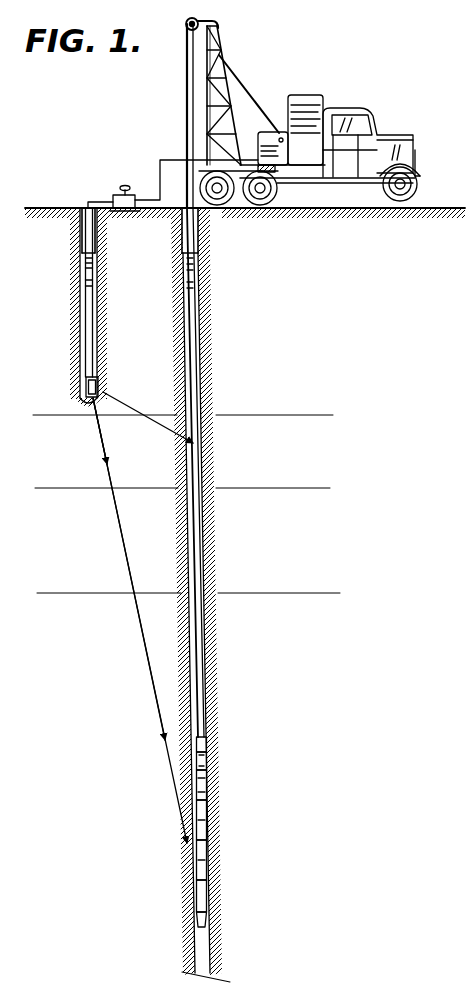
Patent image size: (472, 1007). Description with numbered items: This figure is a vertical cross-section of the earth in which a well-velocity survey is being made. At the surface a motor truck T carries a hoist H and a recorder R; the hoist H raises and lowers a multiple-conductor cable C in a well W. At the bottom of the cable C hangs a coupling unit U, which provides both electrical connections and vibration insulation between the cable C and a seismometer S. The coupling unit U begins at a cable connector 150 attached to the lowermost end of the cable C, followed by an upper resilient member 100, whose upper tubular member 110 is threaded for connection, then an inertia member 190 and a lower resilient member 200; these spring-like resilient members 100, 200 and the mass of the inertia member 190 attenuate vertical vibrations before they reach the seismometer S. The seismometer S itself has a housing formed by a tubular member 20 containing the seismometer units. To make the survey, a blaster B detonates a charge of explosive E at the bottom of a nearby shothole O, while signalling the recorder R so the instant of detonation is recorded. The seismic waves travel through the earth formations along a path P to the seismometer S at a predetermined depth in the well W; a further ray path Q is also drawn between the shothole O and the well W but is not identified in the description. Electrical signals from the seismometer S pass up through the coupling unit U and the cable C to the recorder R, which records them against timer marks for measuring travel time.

The blaster B is at (136, 195).
The hoist H is at (276, 130).
The recorder R is at (314, 94).
The motor truck T is at (356, 107).
The shothole O is at (97, 312).
The multiple-conductor cable C is at (193, 318).
The charge of explosive E is at (100, 388).
The direct travel path Q is at (147, 418).
The well W is at (199, 394).
The path P is at (116, 517).
The coupling unit U is at (216, 738).
The seismometer S is at (208, 914).
The cable connector 150 is at (208, 738).
The upper tubular member 110 is at (209, 761).
The upper resilient member 100 is at (199, 785).
The inertia member 190 is at (203, 812).
The lower resilient member 200 is at (198, 853).
The tubular member 20 is at (200, 903).